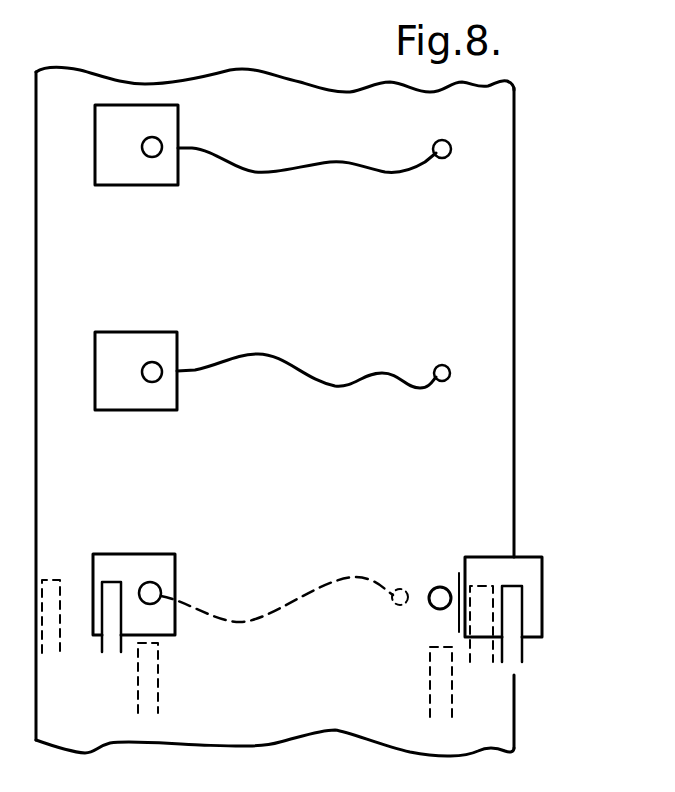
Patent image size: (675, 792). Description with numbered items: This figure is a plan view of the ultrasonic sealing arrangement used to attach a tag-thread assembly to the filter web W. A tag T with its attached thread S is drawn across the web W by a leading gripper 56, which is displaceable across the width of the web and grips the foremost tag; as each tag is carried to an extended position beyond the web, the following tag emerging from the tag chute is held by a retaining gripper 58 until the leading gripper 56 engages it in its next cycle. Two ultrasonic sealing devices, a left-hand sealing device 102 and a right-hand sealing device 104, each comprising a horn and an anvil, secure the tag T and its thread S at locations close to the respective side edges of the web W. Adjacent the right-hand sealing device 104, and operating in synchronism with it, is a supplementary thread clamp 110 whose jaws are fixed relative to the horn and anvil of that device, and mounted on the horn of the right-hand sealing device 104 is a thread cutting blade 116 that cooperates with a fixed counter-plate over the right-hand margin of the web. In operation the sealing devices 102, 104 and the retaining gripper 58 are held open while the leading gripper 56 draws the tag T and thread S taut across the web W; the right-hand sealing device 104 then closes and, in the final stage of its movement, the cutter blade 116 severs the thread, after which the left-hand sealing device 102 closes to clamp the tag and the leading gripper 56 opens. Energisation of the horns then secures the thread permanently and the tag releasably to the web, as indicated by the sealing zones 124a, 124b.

The web W is at (498, 242).
The tag T is at (137, 187).
The thread S is at (280, 174).
The sealing zone 124a is at (447, 381).
The sealing zone 124b is at (158, 379).
The leading gripper 56 is at (110, 585).
The left-hand sealing device 102 is at (156, 587).
The supplementary thread clamp 110 is at (403, 607).
The right-hand sealing device 104 is at (437, 588).
The thread cutting blade 116 is at (459, 585).
The retaining gripper 58 is at (508, 623).